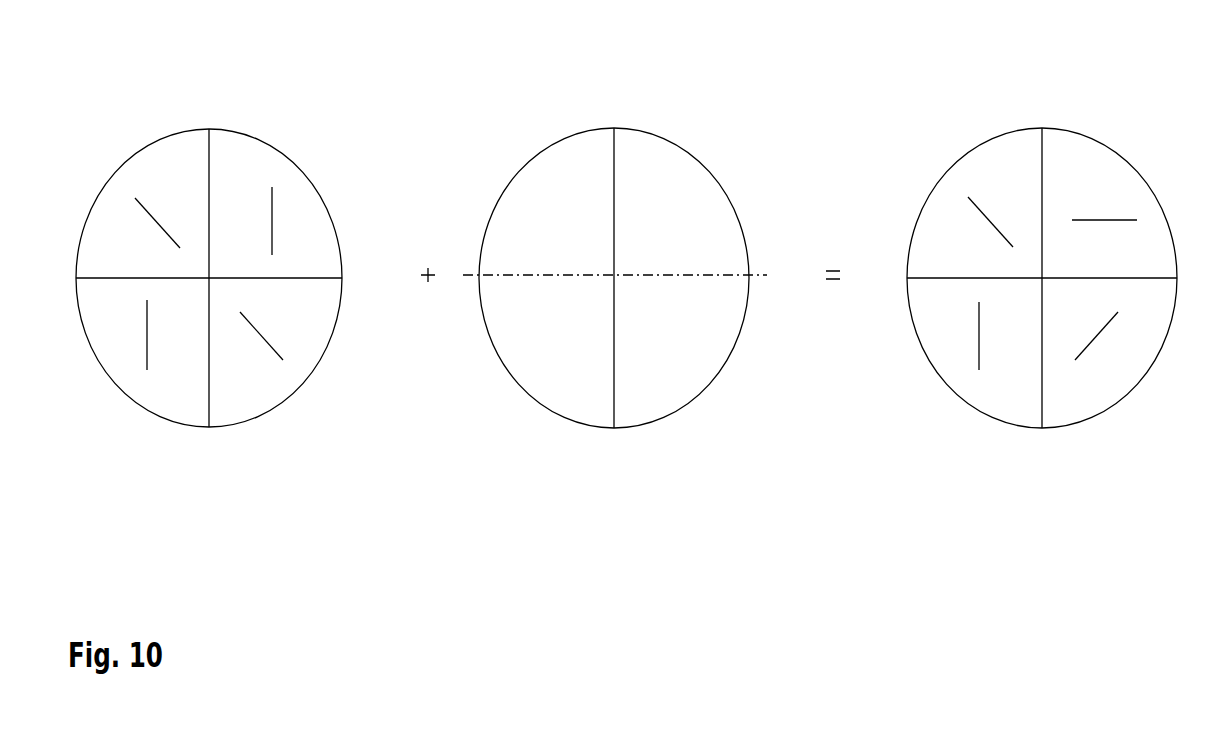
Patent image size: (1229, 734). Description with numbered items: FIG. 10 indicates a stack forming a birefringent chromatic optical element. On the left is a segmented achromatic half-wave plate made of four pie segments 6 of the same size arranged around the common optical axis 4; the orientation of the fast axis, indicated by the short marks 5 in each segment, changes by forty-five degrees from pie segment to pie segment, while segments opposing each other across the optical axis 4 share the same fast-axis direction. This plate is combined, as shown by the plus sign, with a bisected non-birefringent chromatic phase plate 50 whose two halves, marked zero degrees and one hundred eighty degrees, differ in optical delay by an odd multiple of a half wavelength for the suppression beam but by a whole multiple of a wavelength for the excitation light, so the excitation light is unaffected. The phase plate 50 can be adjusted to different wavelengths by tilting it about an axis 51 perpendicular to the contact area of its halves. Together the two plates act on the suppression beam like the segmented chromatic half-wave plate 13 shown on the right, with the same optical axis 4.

The optical axis 4 is at (208, 280).
The marking elements 5 is at (147, 205).
The pie segments 6 is at (117, 168).
The segmented chromatic λ/2 plate 13 is at (1088, 167).
The bisected non-birefringent chromatic phase plate 50 is at (688, 150).
The tilting axis 51 is at (628, 272).